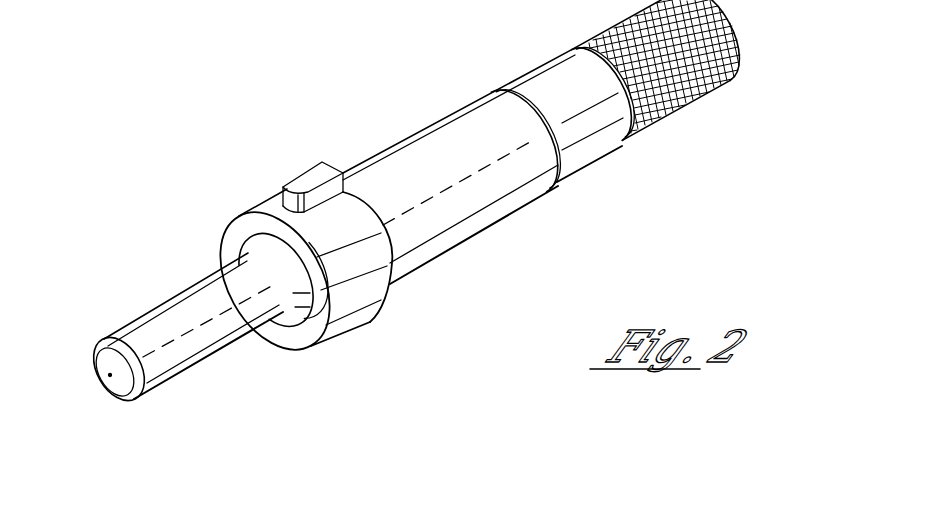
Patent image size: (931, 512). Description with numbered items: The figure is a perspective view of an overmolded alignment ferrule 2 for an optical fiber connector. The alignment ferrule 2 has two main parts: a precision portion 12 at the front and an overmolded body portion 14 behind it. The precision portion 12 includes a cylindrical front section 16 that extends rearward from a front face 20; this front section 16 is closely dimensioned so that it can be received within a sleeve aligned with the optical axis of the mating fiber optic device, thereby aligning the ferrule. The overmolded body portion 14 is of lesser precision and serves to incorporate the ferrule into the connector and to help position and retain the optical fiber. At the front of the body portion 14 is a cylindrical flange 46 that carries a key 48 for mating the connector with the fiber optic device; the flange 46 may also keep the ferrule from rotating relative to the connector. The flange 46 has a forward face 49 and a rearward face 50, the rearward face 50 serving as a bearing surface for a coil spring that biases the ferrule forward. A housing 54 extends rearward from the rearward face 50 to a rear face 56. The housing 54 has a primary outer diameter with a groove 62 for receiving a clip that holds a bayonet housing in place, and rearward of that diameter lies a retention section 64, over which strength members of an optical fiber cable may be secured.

The alignment ferrule 2 is at (208, 128).
The precision portion 12 is at (175, 384).
The overmolded body portion 14 is at (477, 233).
The front section 16 is at (164, 313).
The front face 20 is at (118, 385).
The flange 46 is at (355, 309).
The key 48 is at (312, 176).
The forward face 49 is at (310, 332).
The rearward face 50 is at (392, 288).
The housing 54 is at (438, 137).
The rear face 56 is at (740, 17).
The groove 62 is at (530, 105).
The retention section 64 is at (682, 107).